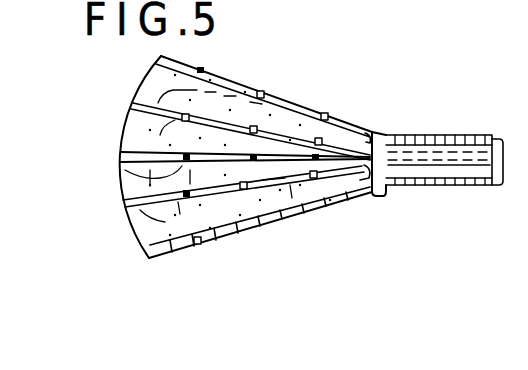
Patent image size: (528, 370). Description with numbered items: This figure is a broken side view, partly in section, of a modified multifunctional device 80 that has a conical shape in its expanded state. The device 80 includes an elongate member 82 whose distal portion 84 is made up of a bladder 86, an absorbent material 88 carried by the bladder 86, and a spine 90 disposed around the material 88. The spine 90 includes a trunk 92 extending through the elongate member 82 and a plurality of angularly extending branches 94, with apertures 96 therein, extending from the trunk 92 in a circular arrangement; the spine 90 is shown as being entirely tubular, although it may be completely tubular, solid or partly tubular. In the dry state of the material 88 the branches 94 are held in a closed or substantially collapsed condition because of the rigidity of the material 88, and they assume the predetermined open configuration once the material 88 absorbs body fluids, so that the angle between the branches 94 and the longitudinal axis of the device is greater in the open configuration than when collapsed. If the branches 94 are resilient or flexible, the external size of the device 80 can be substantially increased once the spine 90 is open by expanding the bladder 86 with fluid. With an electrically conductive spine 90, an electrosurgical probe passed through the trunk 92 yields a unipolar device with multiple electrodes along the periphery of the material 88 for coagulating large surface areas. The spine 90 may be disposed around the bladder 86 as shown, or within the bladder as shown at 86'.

The multifunctional device 80 is at (138, 283).
The elongate member 82 is at (432, 135).
The distal portion 84 is at (281, 95).
The bladder 86 is at (255, 201).
The bladder 86' is at (275, 231).
The absorbent material 88 is at (143, 225).
The spine 90 is at (363, 125).
The trunk 92 is at (462, 177).
The branches 94 is at (122, 134).
The apertures 96 is at (121, 167).